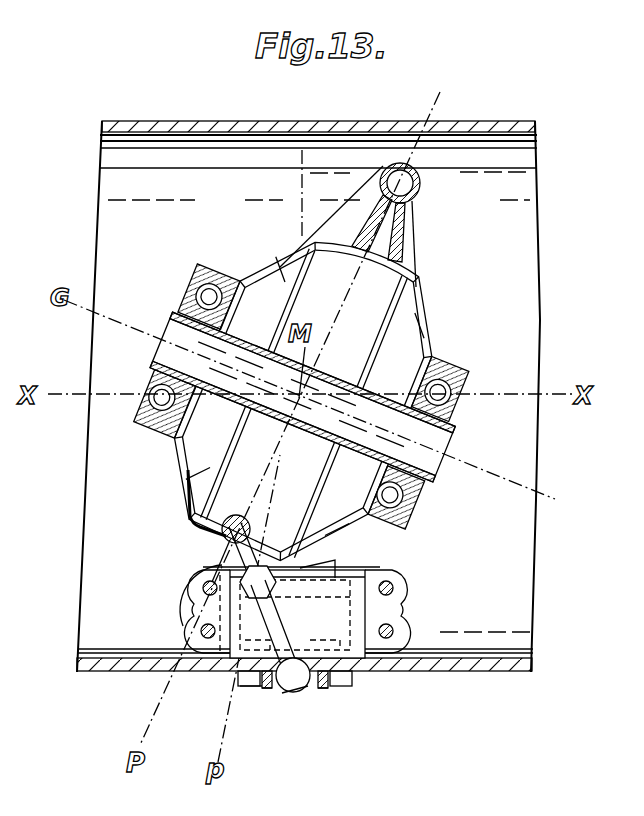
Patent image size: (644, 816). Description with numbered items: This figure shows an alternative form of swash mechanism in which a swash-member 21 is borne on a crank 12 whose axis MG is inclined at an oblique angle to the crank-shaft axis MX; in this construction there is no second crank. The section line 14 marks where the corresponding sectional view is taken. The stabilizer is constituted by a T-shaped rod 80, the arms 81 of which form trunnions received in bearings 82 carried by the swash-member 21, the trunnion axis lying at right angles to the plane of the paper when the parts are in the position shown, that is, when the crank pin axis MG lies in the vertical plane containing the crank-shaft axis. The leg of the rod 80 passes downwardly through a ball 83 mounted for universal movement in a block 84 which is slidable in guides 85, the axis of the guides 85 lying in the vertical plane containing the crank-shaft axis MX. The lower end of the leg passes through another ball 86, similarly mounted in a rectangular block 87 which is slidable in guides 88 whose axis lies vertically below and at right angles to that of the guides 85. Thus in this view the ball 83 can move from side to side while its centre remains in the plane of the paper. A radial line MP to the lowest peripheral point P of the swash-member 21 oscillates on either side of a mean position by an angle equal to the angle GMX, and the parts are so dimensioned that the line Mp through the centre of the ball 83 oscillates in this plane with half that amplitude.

The crank 12 is at (428, 466).
The section line 14 is at (293, 778).
The swash-member 21 is at (277, 260).
The T-shaped rod 80 is at (507, 613).
The arms 81 is at (217, 540).
The bearings 82 is at (232, 517).
The ball 83 is at (237, 573).
The block 84 is at (322, 580).
The guides 85 is at (372, 578).
The ball 86 is at (245, 674).
The rectangular block 87 is at (312, 684).
The guides 88 is at (267, 686).